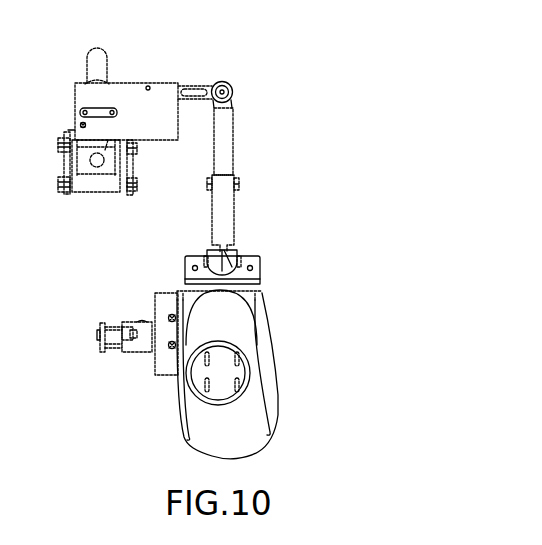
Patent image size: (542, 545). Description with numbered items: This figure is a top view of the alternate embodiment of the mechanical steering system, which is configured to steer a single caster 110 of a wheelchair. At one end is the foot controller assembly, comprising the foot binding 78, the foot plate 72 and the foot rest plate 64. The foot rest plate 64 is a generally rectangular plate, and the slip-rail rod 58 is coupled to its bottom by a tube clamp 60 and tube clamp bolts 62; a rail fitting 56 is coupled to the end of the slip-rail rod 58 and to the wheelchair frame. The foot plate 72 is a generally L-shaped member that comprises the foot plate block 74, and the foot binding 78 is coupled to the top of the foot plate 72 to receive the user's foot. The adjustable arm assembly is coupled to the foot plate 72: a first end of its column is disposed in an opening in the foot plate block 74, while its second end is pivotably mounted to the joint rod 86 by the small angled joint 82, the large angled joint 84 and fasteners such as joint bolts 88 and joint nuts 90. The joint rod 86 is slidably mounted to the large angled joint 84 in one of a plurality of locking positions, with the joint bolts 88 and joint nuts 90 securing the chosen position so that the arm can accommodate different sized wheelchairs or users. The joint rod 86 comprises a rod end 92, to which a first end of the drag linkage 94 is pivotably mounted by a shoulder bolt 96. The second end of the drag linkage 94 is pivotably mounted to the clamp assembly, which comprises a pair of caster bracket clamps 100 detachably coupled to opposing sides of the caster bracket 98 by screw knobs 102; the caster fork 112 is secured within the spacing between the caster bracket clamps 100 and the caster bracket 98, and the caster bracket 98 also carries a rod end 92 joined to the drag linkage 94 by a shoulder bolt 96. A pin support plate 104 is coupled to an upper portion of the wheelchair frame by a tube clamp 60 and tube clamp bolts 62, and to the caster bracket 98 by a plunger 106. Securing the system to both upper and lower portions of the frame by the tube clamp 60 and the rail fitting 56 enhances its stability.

The rail fitting 56 is at (136, 352).
The slip-rail rod 58 is at (153, 325).
The tube clamp 60 is at (78, 112).
The tube clamp bolts 62 is at (173, 315).
The foot rest plate 64 is at (166, 375).
The foot plate 72 is at (262, 291).
The foot plate block 74 is at (260, 271).
The foot binding 78 is at (200, 440).
The small angled joint 82 is at (226, 255).
The large angled joint 84 is at (234, 212).
The joint rod 86 is at (230, 129).
The joint bolts 88 is at (206, 183).
The joint nuts 90 is at (240, 185).
The rod end 92 is at (233, 86).
The drag linkage 94 is at (183, 85).
The shoulder bolt 96 is at (231, 91).
The caster bracket 98 is at (86, 192).
The caster bracket clamps 100 is at (70, 192).
The screw knobs 102 is at (59, 146).
The pin support plate 104 is at (128, 90).
The plunger 106 is at (80, 126).
The caster 110 is at (106, 46).
The caster fork 112 is at (108, 140).